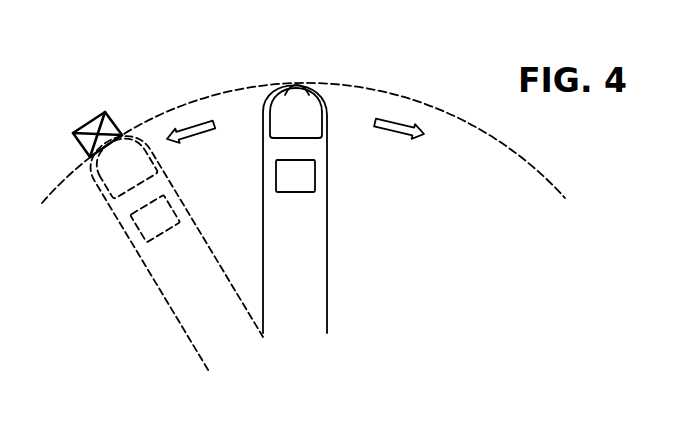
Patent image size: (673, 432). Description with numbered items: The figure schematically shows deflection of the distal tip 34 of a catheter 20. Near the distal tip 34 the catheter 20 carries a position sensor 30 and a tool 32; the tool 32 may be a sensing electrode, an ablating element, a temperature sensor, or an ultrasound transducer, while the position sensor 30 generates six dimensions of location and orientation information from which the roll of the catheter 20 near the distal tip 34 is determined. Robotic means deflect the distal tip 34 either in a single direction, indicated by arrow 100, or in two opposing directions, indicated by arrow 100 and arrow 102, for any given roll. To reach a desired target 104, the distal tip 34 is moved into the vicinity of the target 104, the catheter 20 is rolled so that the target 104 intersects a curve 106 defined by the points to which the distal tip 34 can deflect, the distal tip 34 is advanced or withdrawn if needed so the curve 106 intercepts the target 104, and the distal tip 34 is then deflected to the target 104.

The catheter 20 is at (315, 263).
The position sensor 30 is at (312, 177).
The tool 32 is at (305, 132).
The distal tip 34 is at (302, 83).
The arrow 100 is at (198, 121).
The arrow 102 is at (396, 120).
The target 104 is at (86, 121).
The curve 106 is at (168, 115).